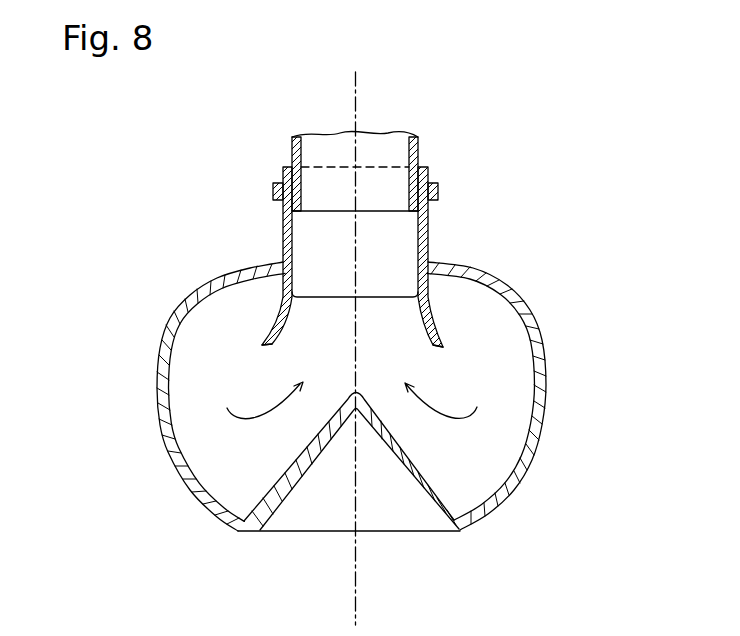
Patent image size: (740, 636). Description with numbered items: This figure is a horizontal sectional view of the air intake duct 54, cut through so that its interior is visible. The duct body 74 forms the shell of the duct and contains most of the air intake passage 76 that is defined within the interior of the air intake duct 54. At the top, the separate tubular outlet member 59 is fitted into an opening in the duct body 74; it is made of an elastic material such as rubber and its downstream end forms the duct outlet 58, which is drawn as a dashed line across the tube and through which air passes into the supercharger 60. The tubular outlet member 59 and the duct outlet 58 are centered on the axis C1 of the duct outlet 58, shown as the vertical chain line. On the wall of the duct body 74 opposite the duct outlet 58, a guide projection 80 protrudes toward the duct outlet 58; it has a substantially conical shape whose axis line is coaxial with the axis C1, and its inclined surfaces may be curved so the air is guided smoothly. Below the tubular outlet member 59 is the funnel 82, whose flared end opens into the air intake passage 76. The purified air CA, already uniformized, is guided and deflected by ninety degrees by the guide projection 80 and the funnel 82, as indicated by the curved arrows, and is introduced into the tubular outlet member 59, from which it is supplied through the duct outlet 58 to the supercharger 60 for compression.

The air intake duct 54 is at (538, 292).
The duct outlet 58 is at (337, 167).
The tubular outlet member 59 is at (283, 226).
The supercharger 60 is at (418, 138).
The duct body 74 is at (532, 460).
The air intake passage 76 is at (389, 247).
The guide projection 80 is at (397, 457).
The funnel 82 is at (440, 338).
The purified air CA is at (250, 425).
The axis of the duct outlet C1 is at (356, 593).